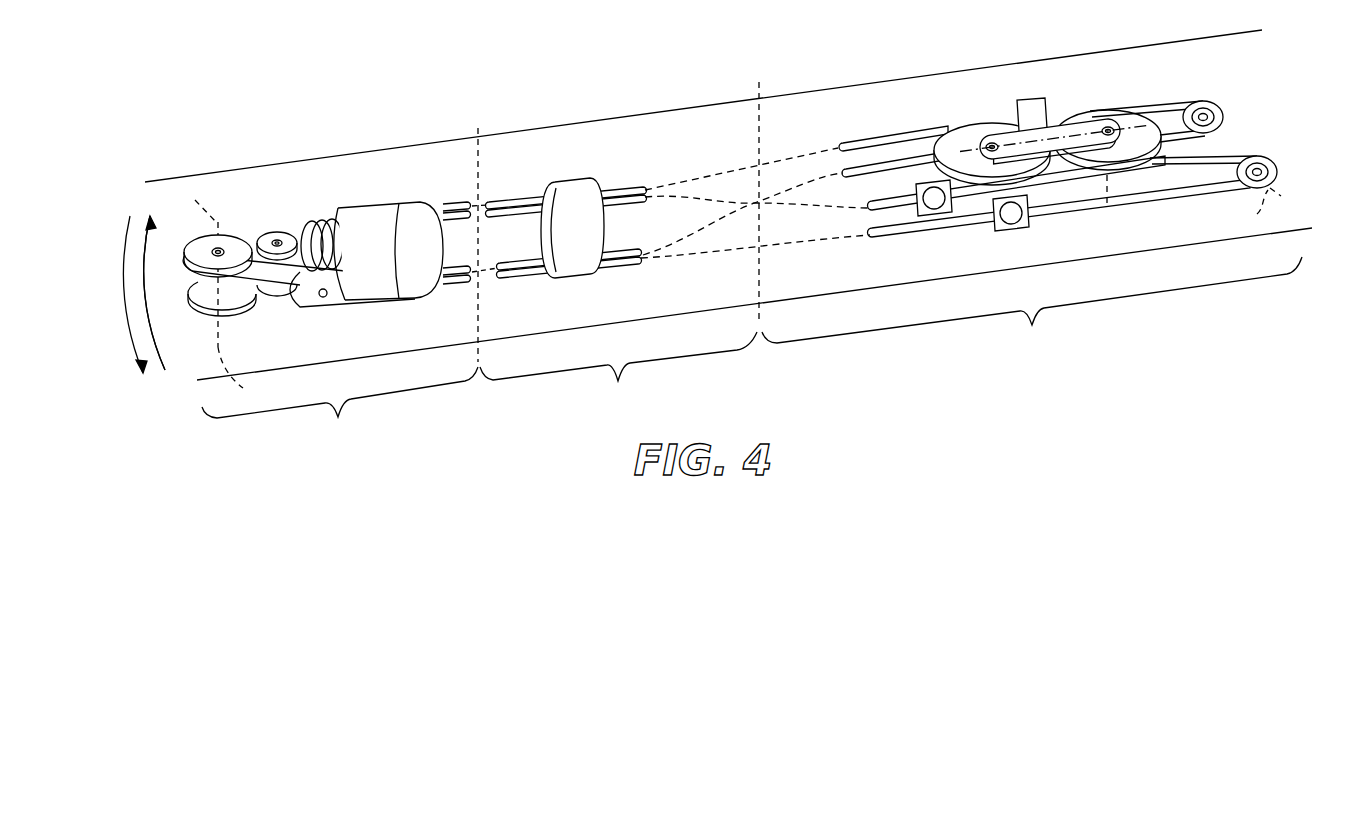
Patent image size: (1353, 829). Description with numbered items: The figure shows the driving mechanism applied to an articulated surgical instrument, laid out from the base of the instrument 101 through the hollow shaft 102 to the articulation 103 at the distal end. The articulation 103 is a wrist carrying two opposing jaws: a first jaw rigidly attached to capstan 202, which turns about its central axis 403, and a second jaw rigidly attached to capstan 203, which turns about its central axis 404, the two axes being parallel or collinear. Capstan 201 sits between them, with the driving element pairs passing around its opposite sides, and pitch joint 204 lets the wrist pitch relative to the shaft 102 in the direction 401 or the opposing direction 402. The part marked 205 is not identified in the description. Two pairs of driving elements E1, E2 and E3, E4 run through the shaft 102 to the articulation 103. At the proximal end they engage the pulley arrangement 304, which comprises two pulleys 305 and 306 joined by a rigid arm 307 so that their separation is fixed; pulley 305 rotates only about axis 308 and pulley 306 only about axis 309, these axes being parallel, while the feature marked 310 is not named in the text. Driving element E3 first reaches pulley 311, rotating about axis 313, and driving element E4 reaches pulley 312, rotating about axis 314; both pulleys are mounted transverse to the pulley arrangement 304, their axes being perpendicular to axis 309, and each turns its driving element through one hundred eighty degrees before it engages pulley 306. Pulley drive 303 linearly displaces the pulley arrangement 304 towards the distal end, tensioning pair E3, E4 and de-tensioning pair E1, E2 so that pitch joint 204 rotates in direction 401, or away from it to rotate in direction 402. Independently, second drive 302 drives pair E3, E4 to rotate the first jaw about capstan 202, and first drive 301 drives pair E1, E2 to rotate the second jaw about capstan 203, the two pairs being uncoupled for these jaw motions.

The base of the instrument 101 is at (1032, 304).
The shaft 102 is at (618, 371).
The articulation 103 is at (340, 407).
The capstan 201 is at (278, 242).
The capstan 202 is at (233, 243).
The capstan 203 is at (207, 304).
The pitch joint 204 is at (323, 297).
The arm 205 is at (272, 288).
The first drive 301 is at (928, 218).
The second drive 302 is at (1001, 233).
The pulley drive 303 is at (1033, 99).
The pulley arrangement 304 is at (1108, 69).
The pulley 305 is at (950, 135).
The pulley 306 is at (1137, 160).
The arm 307 is at (1060, 188).
The axis 308 is at (992, 145).
The axis 309 is at (1187, 101).
The pulley hub 310 is at (1102, 127).
The pulley 311 is at (1222, 110).
The pulley 312 is at (1276, 160).
The axis 313 is at (1216, 134).
The axis 314 is at (1247, 210).
The direction 401 is at (160, 368).
The opposing direction 402 is at (130, 217).
The central axis 403 is at (186, 266).
The central axis 404 is at (246, 375).
The driving element E1 is at (607, 187).
The driving element E2 is at (637, 188).
The driving element E3 is at (622, 255).
The driving element E4 is at (637, 258).